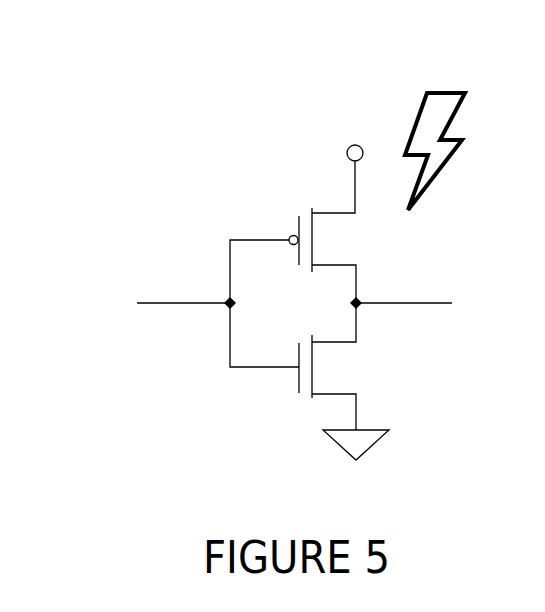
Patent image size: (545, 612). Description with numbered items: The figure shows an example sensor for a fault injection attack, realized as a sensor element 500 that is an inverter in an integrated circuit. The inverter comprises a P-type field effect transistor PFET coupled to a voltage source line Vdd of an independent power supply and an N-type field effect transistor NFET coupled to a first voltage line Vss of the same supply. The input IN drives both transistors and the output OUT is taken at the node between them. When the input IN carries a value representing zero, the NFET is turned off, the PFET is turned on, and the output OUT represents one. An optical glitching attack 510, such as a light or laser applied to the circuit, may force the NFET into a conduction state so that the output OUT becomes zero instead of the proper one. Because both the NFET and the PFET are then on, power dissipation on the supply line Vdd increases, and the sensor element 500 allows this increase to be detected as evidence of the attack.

The sensor element 500 is at (134, 126).
The optical glitching attack 510 is at (430, 108).
The voltage source line Vdd is at (337, 156).
The first voltage line Vss is at (376, 452).
The P-type field effect transistor PFET is at (311, 236).
The N-type field effect transistor NFET is at (294, 373).
The input IN is at (184, 303).
The output OUT is at (429, 290).